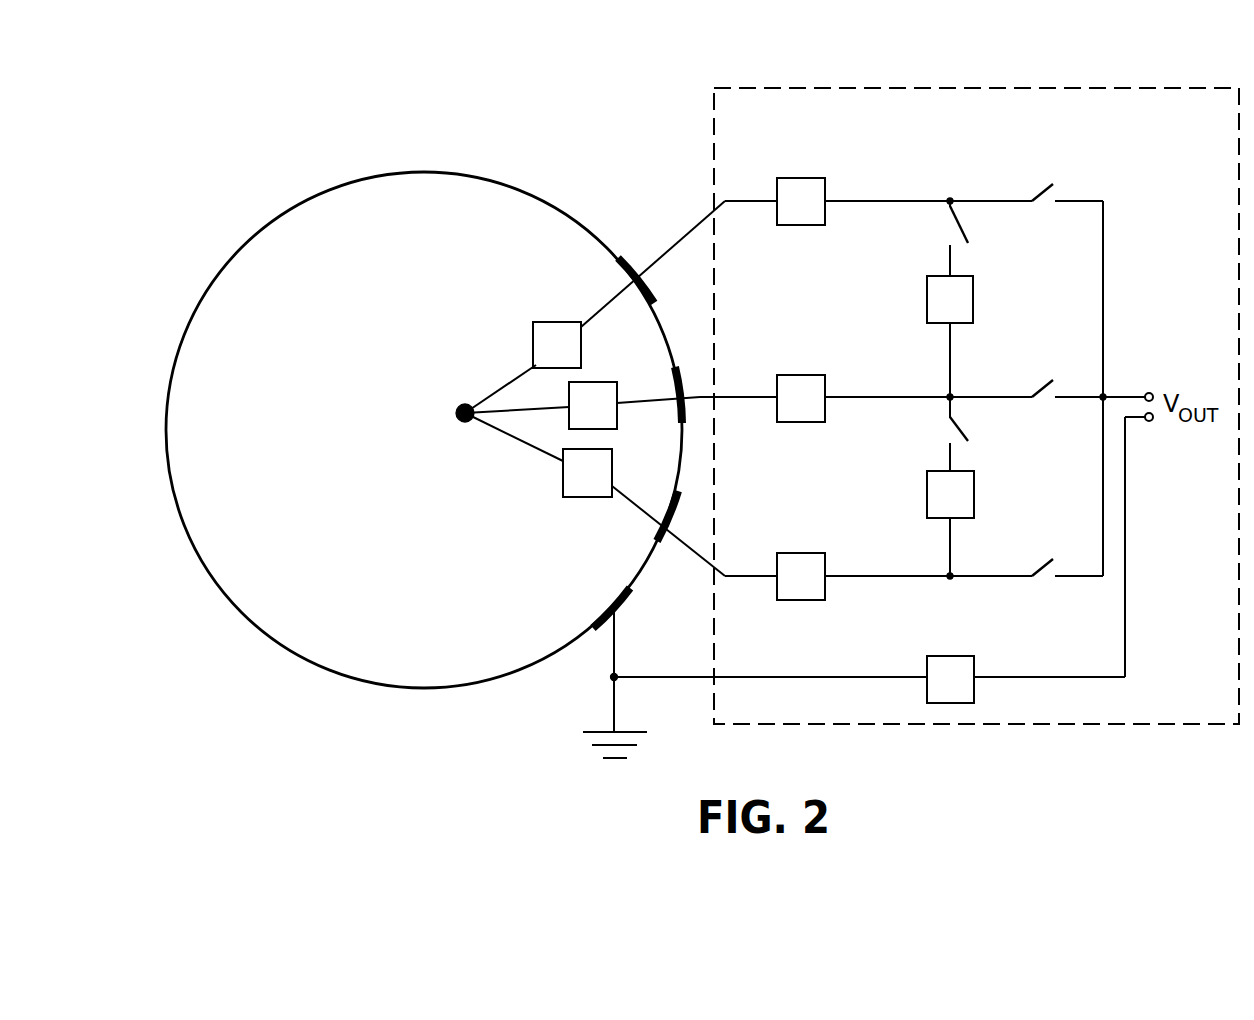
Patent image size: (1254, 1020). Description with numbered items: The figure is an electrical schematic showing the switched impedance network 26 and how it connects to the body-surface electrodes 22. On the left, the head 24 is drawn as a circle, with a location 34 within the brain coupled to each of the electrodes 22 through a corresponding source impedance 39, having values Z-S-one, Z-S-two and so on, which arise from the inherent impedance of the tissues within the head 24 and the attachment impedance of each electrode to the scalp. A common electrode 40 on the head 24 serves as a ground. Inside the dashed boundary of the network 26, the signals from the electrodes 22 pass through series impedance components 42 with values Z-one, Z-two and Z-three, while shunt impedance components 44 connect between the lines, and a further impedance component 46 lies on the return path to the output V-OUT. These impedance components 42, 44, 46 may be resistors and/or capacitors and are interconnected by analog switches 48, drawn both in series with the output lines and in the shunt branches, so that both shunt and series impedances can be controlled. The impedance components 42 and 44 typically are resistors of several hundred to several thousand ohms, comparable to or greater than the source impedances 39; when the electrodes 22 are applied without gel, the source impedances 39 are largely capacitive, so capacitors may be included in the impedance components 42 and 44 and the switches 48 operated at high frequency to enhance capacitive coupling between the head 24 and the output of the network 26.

The electrodes 22 is at (626, 291).
The head 24 is at (292, 206).
The switched impedance network 26 is at (1002, 88).
The location within the brain 34 is at (456, 421).
The source impedance 39 is at (533, 336).
The common electrode 40 is at (601, 619).
The impedance components 42 is at (791, 178).
The impedance components 44 is at (931, 276).
The impedance component 46 is at (930, 656).
The analog switches 48 is at (1043, 191).